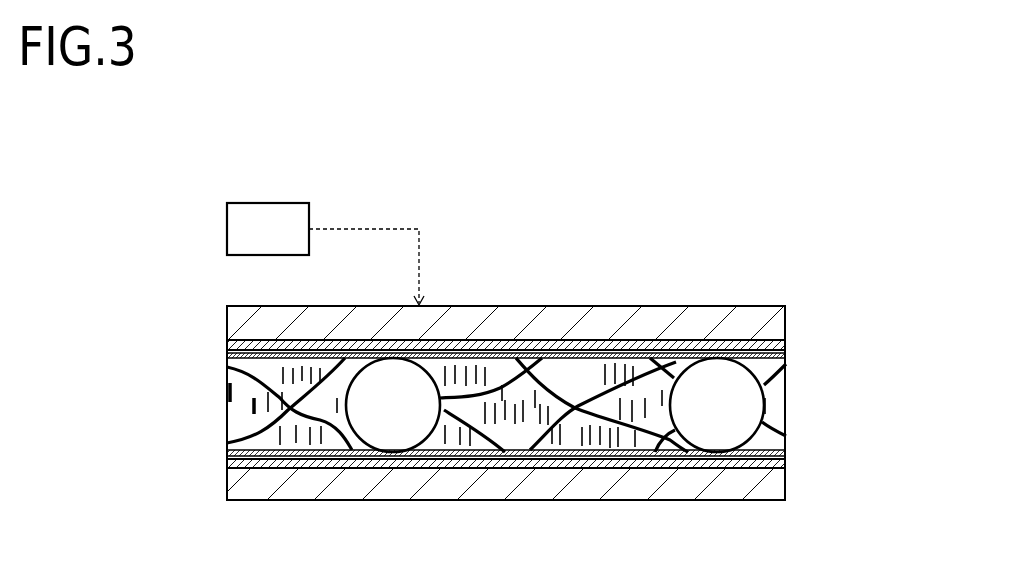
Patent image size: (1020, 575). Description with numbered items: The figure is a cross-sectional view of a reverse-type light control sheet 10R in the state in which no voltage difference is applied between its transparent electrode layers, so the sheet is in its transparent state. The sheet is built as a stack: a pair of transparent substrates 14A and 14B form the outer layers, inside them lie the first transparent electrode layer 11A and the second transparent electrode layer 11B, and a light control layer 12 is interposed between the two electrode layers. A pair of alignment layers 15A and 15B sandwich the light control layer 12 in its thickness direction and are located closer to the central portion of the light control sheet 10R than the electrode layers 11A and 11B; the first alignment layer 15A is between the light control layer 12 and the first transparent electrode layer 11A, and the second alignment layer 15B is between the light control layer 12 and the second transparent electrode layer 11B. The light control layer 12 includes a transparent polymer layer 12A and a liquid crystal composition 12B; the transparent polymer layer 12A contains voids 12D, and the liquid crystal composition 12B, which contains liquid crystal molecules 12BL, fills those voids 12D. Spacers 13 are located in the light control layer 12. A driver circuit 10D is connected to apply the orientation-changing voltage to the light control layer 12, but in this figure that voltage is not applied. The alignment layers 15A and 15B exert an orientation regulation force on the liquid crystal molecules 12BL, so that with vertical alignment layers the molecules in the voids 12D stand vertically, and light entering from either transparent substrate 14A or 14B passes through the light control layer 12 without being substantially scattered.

The reverse-type light control sheet 10R is at (875, 296).
The driver circuit 10D is at (227, 229).
The first transparent substrate 14A is at (785, 323).
The second transparent substrate 14B is at (786, 485).
The first transparent electrode layer 11A is at (228, 344).
The second transparent electrode layer 11B is at (228, 463).
The first alignment layer 15A is at (785, 355).
The second alignment layer 15B is at (786, 456).
The light control layer 12 is at (228, 412).
The transparent polymer layer 12A is at (333, 368).
The liquid crystal composition 12B is at (553, 442).
The liquid crystal molecules 12BL is at (650, 368).
The voids 12D is at (340, 436).
The spacers 13 is at (733, 370).